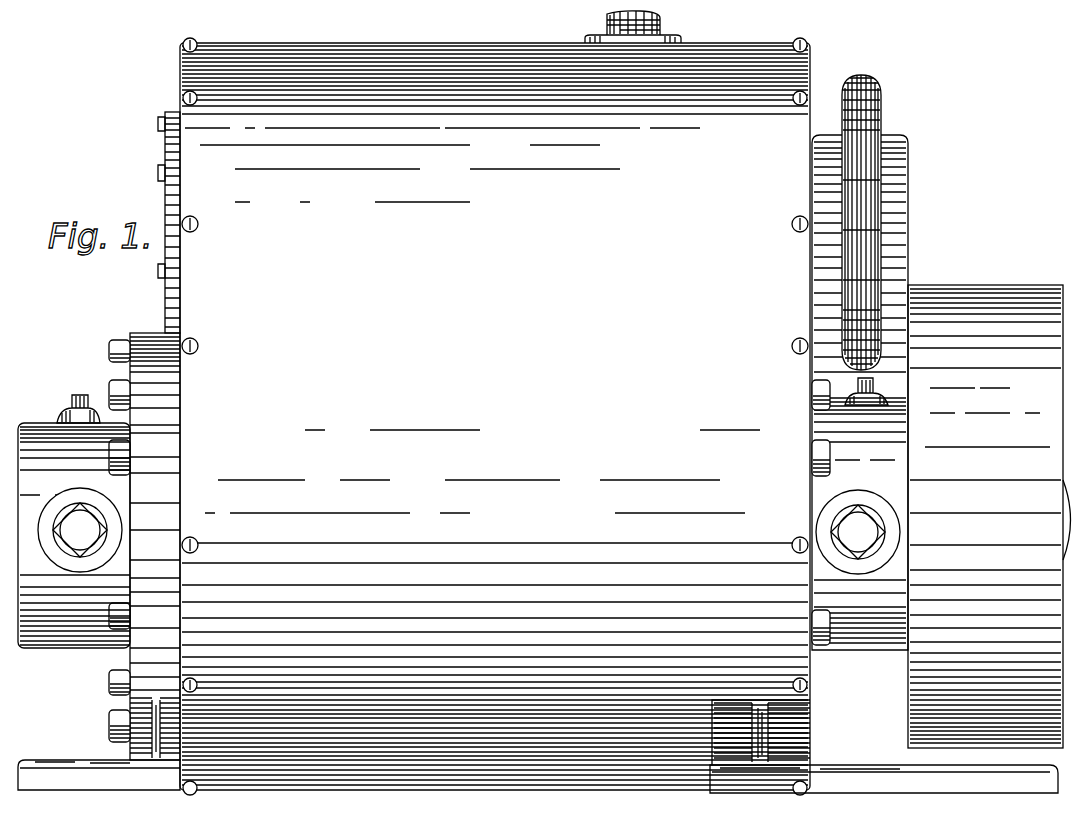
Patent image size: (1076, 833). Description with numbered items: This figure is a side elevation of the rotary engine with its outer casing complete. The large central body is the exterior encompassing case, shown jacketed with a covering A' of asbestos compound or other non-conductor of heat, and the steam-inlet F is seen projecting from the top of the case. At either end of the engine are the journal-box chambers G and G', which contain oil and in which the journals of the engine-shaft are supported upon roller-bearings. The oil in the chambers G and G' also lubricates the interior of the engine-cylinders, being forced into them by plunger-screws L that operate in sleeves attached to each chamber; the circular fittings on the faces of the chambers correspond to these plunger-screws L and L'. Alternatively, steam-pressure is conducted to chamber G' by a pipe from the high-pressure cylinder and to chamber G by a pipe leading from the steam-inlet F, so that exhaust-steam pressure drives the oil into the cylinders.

The jacket covering A' is at (538, 416).
The steam-inlet F is at (660, 19).
The plunger-screw L is at (834, 532).
The bearing cap L' is at (61, 530).
The journal-box chamber G is at (860, 378).
The journal-box chamber G' is at (74, 550).